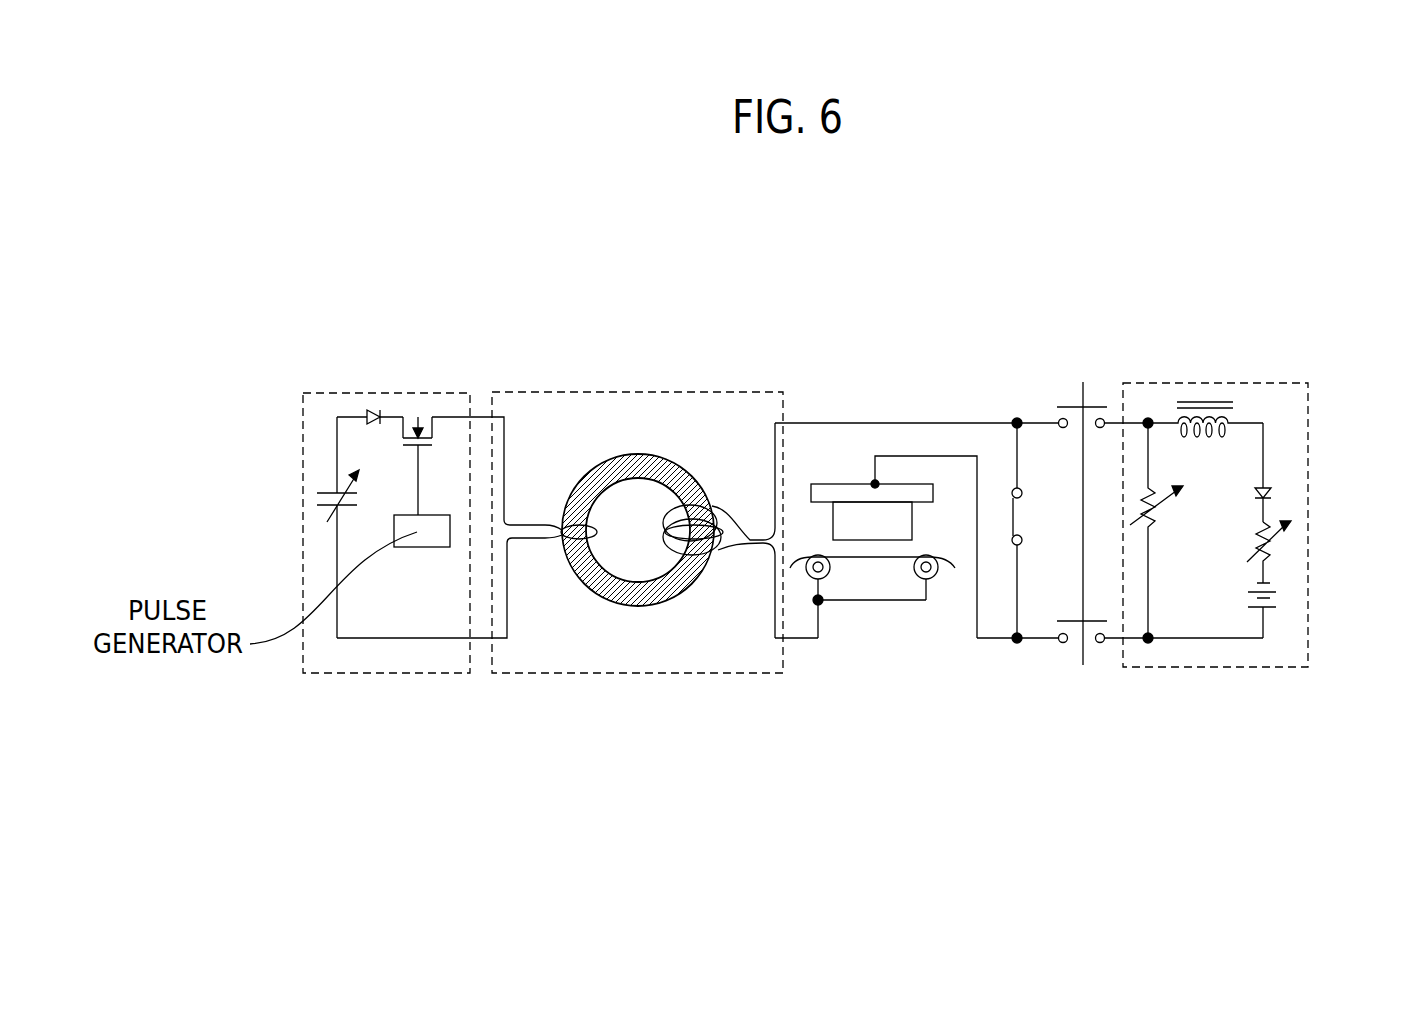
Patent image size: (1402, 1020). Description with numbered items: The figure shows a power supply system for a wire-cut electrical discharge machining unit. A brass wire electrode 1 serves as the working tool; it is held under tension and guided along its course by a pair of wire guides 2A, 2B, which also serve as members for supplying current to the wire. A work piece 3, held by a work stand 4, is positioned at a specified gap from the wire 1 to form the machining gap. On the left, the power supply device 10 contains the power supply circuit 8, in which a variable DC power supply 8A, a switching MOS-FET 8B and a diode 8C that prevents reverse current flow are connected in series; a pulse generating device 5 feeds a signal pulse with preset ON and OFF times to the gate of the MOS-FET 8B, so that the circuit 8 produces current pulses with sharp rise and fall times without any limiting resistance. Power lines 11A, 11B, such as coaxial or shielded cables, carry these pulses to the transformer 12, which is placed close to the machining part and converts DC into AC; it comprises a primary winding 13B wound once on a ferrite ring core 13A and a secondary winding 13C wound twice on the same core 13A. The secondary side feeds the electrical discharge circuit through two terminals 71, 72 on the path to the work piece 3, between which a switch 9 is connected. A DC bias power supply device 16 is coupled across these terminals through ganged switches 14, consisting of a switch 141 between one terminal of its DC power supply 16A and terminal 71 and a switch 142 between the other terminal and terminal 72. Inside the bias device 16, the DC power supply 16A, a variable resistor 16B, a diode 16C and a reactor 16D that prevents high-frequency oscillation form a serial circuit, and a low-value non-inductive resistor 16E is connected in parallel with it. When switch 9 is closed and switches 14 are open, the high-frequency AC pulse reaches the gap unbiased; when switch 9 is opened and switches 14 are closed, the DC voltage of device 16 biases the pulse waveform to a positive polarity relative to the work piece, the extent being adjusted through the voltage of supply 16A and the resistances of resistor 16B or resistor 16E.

The wire electrode 1 is at (845, 558).
The wire guide 2A is at (825, 575).
The wire guide 2B is at (930, 580).
The work piece 3 is at (905, 513).
The work stand 4 is at (818, 488).
The pulse generating device 5 is at (403, 548).
The power supply circuit 8 is at (337, 462).
The variable DC power supply 8A is at (328, 503).
The field effect transistor (MOS-FET) 8B is at (438, 424).
The diode 8C is at (364, 410).
The switch 9 is at (1021, 521).
The power supply device 10 is at (368, 392).
The power line 11A is at (503, 414).
The power line 11B is at (482, 638).
The transformer 12 is at (613, 391).
The ring core 13A is at (618, 603).
The primary winding 13B is at (551, 528).
The secondary winding 13C is at (732, 534).
The ganged switches 14 is at (1075, 537).
The switch 141 is at (1067, 403).
The switch 142 is at (1064, 650).
The DC bias power supply device 16 is at (1168, 384).
The DC power supply 16A is at (1278, 599).
The variable resistor 16B is at (1277, 547).
The diode 16C is at (1277, 493).
The reactor 16D is at (1177, 427).
The non-inductive resistor 16E is at (1168, 511).
The terminal 71 is at (1017, 418).
The terminal 72 is at (1017, 643).